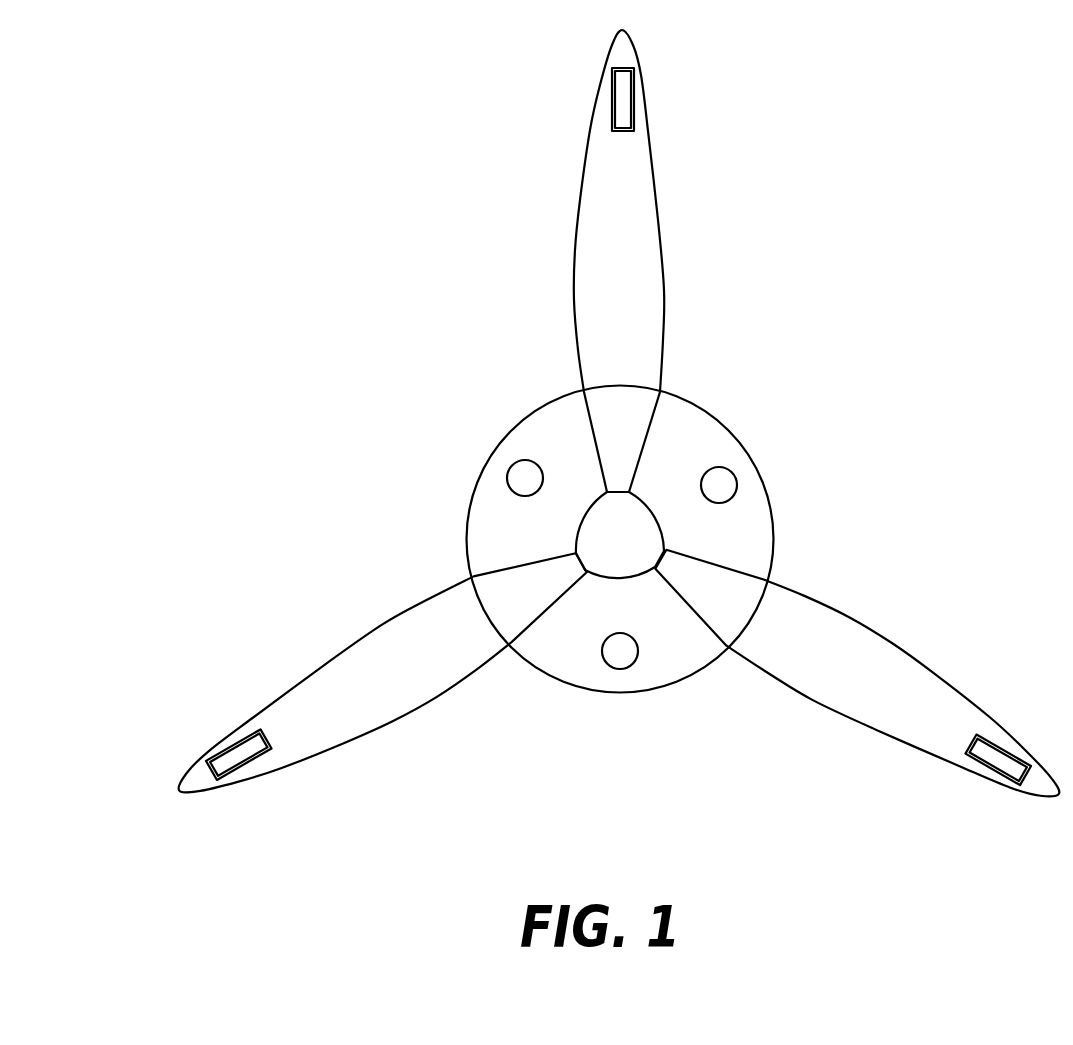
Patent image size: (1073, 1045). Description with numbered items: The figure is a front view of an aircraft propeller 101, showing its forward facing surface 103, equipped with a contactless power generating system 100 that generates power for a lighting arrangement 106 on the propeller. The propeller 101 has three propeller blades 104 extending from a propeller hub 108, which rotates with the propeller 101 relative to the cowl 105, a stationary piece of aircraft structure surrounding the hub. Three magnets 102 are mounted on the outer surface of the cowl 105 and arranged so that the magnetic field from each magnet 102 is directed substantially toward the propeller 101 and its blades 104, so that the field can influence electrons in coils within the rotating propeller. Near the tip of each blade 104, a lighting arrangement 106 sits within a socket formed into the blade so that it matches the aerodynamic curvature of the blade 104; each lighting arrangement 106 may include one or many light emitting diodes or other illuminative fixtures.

The contactless power generating system 100 is at (233, 163).
The propeller 101 is at (615, 450).
The magnets 102 is at (514, 461).
The forward facing surface 103 is at (646, 297).
The propeller blades 104 is at (688, 190).
The cowl 105 is at (497, 511).
The lighting arrangement 106 is at (634, 97).
The propeller hub 108 is at (677, 523).